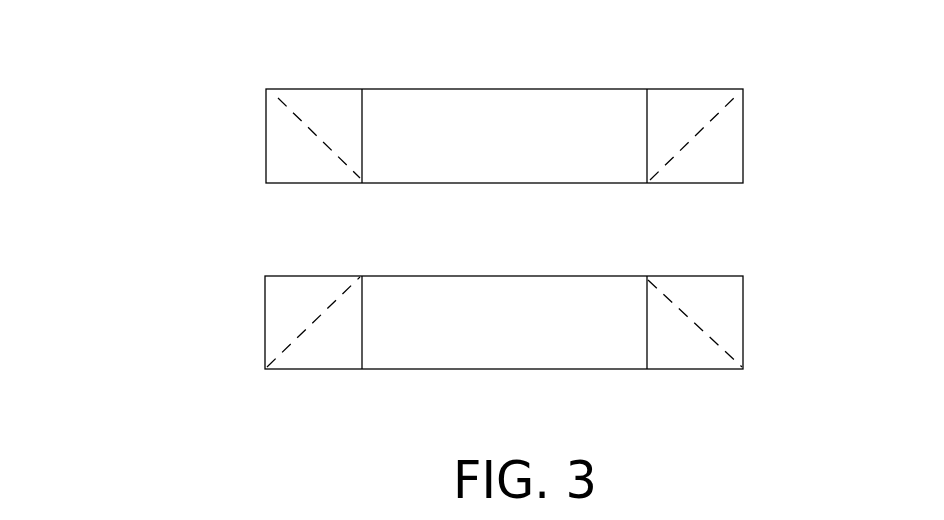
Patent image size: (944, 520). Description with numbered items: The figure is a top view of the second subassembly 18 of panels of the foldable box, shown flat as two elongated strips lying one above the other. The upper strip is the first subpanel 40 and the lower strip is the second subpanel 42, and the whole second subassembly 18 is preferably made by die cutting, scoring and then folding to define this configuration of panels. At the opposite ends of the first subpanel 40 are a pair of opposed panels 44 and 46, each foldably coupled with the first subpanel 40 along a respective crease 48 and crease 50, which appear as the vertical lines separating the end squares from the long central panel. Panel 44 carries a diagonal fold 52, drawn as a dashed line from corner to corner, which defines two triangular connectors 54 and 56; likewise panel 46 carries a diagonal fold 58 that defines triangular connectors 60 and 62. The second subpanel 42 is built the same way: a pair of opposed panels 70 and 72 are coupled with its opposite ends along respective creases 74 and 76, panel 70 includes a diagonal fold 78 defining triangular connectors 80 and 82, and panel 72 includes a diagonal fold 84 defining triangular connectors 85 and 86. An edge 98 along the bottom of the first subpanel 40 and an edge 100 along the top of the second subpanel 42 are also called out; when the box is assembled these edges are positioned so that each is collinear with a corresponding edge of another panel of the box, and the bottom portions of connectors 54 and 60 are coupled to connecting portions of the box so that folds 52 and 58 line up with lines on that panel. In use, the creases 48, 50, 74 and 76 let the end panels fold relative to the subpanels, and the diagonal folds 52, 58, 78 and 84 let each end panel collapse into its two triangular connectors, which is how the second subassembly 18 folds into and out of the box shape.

The second subassembly 18 is at (97, 215).
The first subpanel 40 is at (545, 110).
The second subpanel 42 is at (523, 355).
The panel 44 is at (292, 88).
The panel 46 is at (720, 90).
The crease 48 is at (362, 110).
The crease 50 is at (648, 108).
The diagonal fold 52 is at (307, 127).
The triangular connector 54 is at (307, 168).
The triangular connector 56 is at (315, 98).
The diagonal fold 58 is at (690, 143).
The triangular connector 60 is at (712, 173).
The triangular connector 62 is at (690, 102).
The panel 70 is at (295, 273).
The panel 72 is at (720, 277).
The crease 74 is at (363, 348).
The crease 76 is at (645, 350).
The diagonal fold 78 is at (297, 338).
The triangular connector 80 is at (323, 288).
The triangular connector 82 is at (312, 362).
The diagonal fold 84 is at (725, 348).
The triangular connector 85 is at (691, 283).
The triangular connector 86 is at (700, 363).
The edge 98 is at (520, 183).
The edge 100 is at (502, 275).